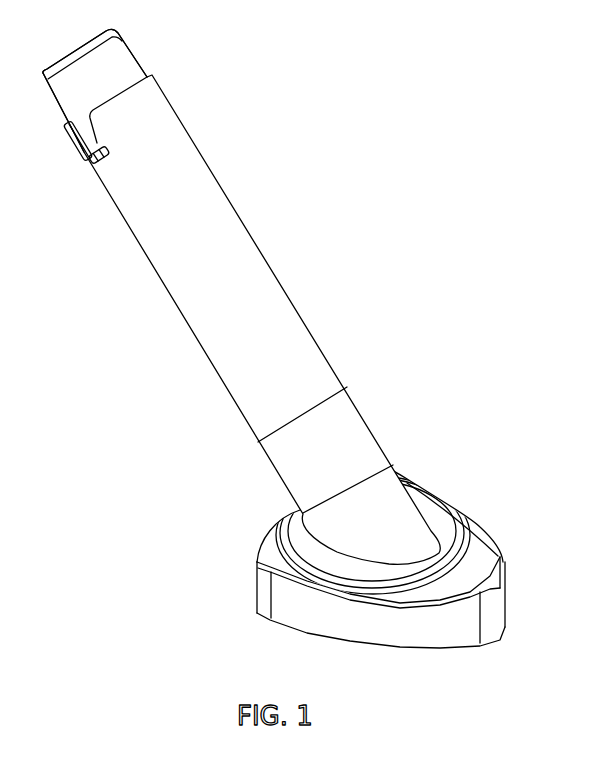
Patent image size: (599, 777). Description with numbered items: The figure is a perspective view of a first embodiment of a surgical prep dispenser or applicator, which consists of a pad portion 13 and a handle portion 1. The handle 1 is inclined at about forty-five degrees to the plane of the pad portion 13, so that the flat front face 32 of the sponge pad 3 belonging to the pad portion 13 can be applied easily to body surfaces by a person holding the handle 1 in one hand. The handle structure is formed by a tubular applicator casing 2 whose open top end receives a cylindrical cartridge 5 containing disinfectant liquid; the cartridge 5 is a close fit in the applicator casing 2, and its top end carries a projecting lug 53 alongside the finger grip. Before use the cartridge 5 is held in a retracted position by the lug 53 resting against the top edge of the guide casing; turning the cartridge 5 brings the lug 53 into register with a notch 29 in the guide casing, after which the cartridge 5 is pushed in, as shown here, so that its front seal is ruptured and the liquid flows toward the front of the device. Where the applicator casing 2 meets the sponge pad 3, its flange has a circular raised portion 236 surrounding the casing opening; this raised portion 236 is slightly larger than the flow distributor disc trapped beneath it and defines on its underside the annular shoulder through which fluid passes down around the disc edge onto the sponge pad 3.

The handle portion 1 is at (296, 362).
The tubular applicator casing 2 is at (302, 355).
The cylindrical cartridge 5 is at (118, 63).
The notch 29 is at (70, 139).
The projecting lug 53 is at (84, 165).
The pad portion 13 is at (416, 583).
The sponge pad 3 is at (497, 620).
The flat front face 32 is at (461, 653).
The circular raised portion 236 is at (450, 530).